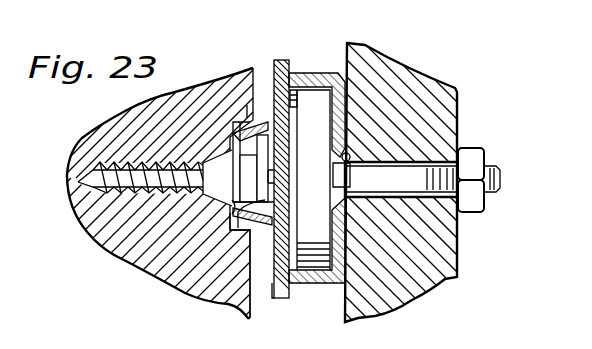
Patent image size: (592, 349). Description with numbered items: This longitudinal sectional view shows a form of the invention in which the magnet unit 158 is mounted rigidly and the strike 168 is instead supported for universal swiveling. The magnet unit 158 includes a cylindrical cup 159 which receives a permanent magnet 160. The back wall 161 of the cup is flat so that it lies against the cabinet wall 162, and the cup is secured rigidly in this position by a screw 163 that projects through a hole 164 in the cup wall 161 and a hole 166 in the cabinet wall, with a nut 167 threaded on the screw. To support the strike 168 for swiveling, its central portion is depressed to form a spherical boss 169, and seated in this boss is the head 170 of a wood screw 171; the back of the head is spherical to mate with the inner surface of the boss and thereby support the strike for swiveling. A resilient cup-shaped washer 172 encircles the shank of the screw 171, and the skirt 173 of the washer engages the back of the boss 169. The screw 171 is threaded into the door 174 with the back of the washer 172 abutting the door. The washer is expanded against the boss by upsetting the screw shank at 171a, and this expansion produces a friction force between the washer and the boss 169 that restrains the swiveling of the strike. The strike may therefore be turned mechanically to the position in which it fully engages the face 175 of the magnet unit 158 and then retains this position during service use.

The magnet unit 158 is at (306, 64).
The cylindrical cup 159 is at (340, 73).
The permanent magnet 160 is at (327, 104).
The back wall 161 is at (344, 118).
The cabinet wall 162 is at (403, 80).
The screw 163 is at (497, 172).
The hole 164 is at (347, 156).
The hole 166 is at (402, 163).
The nut 167 is at (480, 206).
The strike 168 is at (276, 66).
The spherical boss 169 is at (248, 120).
The head 170 is at (262, 124).
The wood screw 171 is at (80, 186).
The upset screw shank 171a is at (222, 194).
The resilient cup-shaped washer 172 is at (232, 138).
The skirt 173 is at (243, 232).
The door 174 is at (92, 228).
The face 175 is at (274, 286).